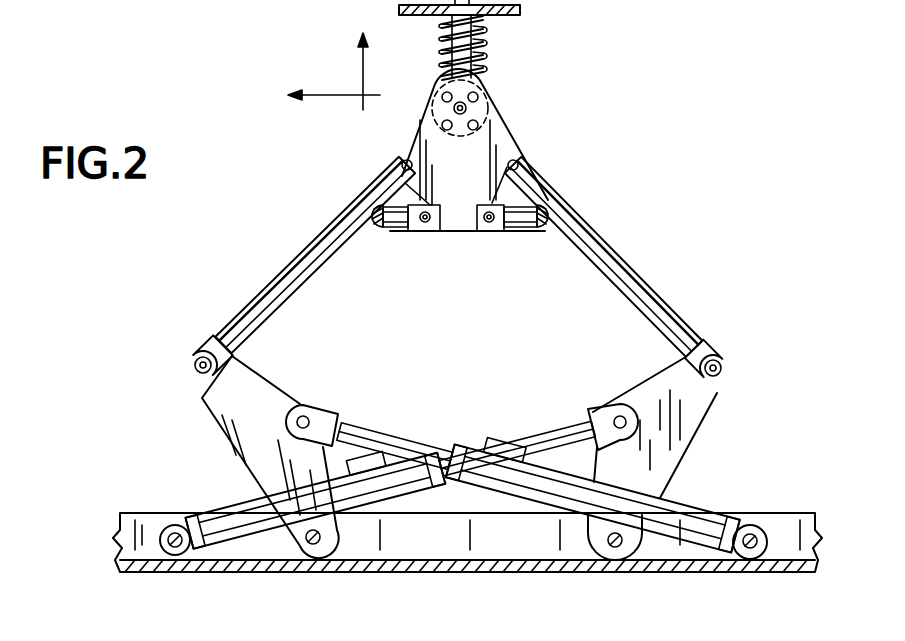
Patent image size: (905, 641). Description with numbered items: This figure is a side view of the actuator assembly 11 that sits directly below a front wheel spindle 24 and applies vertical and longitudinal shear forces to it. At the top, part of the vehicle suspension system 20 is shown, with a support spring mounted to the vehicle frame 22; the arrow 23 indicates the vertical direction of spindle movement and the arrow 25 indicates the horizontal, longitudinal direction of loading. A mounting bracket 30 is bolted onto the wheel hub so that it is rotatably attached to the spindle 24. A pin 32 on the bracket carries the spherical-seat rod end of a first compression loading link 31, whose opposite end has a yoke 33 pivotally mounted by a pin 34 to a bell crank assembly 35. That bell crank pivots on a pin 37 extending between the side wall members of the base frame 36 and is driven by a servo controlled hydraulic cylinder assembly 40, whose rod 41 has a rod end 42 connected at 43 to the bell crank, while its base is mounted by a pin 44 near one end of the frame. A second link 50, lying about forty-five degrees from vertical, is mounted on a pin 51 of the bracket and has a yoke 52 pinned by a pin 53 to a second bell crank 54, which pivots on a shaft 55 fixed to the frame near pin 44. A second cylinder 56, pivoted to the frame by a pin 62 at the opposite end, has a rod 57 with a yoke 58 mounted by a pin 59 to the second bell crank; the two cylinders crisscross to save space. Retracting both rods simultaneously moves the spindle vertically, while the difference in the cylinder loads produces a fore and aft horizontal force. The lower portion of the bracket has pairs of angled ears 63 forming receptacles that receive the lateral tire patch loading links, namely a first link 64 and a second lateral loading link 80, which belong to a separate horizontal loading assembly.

The actuator assembly 11 is at (468, 601).
The suspension system 20 is at (490, 47).
The frame 22 is at (482, 15).
The arrow 23 is at (385, 71).
The spindle 24 is at (487, 108).
The arrow 25 is at (334, 118).
The mounting bracket 30 is at (486, 137).
The first compression loading link 31 is at (604, 257).
The pin 32 is at (548, 165).
The yoke 33 is at (714, 335).
The pin 34 is at (744, 365).
The bell crank assembly 35 is at (655, 417).
The base frame 36 is at (467, 564).
The pin 37 is at (611, 565).
The hydraulic cylinder assembly 40 is at (316, 500).
The rod 41 is at (517, 428).
The rod end 42 is at (592, 413).
The connection 43 is at (640, 441).
The pin 44 is at (179, 512).
The second link 50 is at (315, 255).
The pin 51 is at (381, 150).
The yoke 52 is at (213, 328).
The pin 53 is at (166, 355).
The second bell crank 54 is at (270, 442).
The shaft 55 is at (295, 572).
The cylinder 56 is at (593, 495).
The rod 57 is at (395, 423).
The yoke 58 is at (329, 396).
The pin 59 is at (275, 411).
The pin 62 is at (768, 515).
The ears 63 is at (467, 244).
The first link 64 is at (526, 237).
The second lateral loading link 80 is at (389, 234).